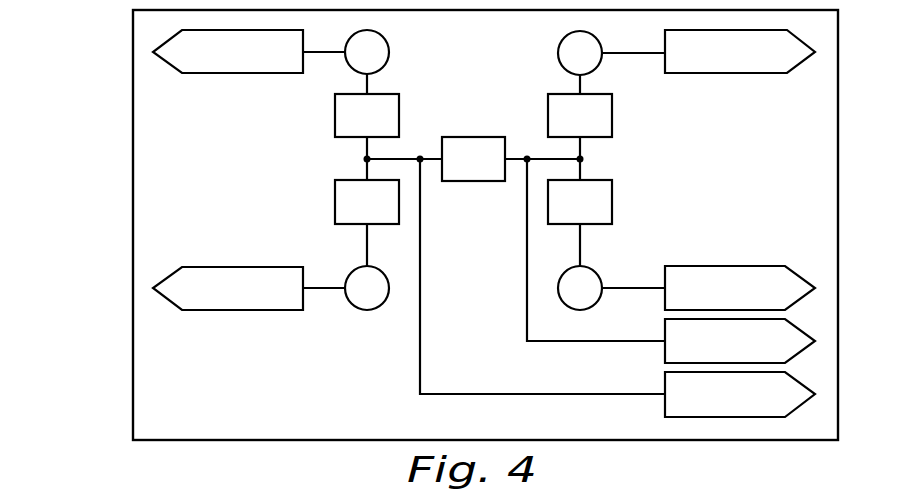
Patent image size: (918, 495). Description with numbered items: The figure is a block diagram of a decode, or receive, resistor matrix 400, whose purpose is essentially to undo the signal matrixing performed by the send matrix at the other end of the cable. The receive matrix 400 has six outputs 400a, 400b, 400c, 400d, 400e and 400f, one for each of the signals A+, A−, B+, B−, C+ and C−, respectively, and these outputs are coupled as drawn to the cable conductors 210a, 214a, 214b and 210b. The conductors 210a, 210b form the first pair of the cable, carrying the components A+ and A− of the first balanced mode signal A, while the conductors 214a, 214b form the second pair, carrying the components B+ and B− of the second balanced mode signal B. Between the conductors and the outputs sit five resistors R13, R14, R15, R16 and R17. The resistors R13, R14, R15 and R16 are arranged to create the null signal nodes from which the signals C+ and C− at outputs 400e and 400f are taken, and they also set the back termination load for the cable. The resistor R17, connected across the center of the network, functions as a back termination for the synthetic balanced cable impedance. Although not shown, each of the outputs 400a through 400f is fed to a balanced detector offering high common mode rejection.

The receive resistor matrix 400 is at (133, 51).
The output A+ 400a is at (216, 73).
The output A− 400b is at (216, 267).
The output B+ 400c is at (737, 73).
The output B− 400d is at (737, 266).
The output C+ 400e is at (665, 405).
The output C− 400f is at (665, 351).
The first pair conductor 210a is at (388, 59).
The first pair conductor 210b is at (596, 275).
The second pair conductor 214a is at (358, 309).
The second pair conductor 214b is at (559, 53).
The resistor R13 is at (367, 115).
The resistor R14 is at (367, 202).
The resistor R15 is at (580, 115).
The resistor R16 is at (580, 202).
The resistor R17 is at (473, 159).